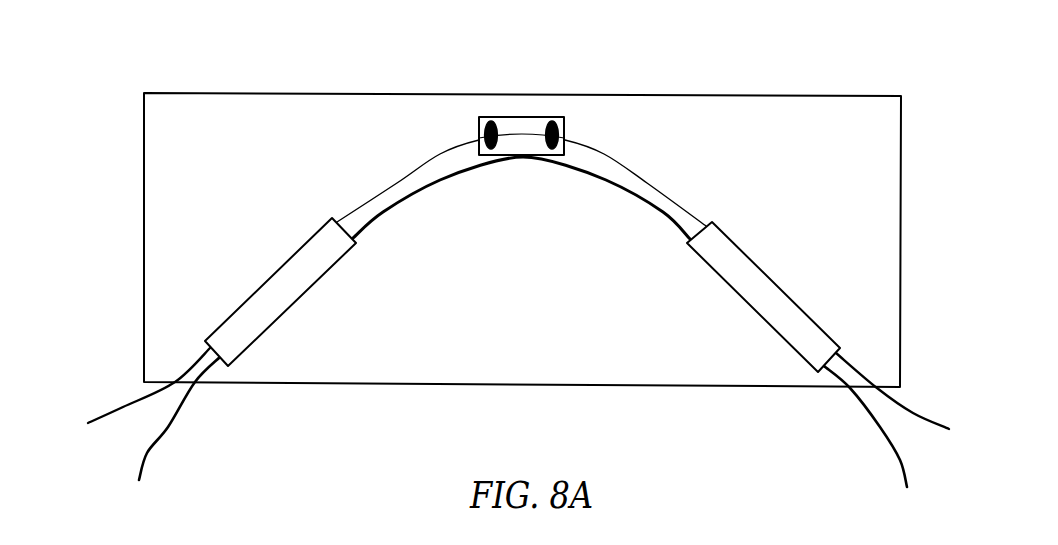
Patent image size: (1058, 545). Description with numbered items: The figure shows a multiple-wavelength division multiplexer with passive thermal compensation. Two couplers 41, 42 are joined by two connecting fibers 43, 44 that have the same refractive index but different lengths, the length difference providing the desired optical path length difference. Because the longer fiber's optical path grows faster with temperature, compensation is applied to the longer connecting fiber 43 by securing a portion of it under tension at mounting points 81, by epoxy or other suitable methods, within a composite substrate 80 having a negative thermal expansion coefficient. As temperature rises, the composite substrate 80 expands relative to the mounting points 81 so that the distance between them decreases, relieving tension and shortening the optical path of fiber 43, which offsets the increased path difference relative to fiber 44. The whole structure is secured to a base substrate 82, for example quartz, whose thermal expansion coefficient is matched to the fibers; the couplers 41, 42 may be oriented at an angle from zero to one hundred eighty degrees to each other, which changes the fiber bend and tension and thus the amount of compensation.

The coupler 41 is at (296, 301).
The coupler 42 is at (753, 307).
The connecting fiber 43 is at (368, 197).
The connecting fiber 44 is at (382, 212).
The composite substrate 80 is at (524, 150).
The mounting points 81 is at (552, 121).
The base substrate 82 is at (655, 377).